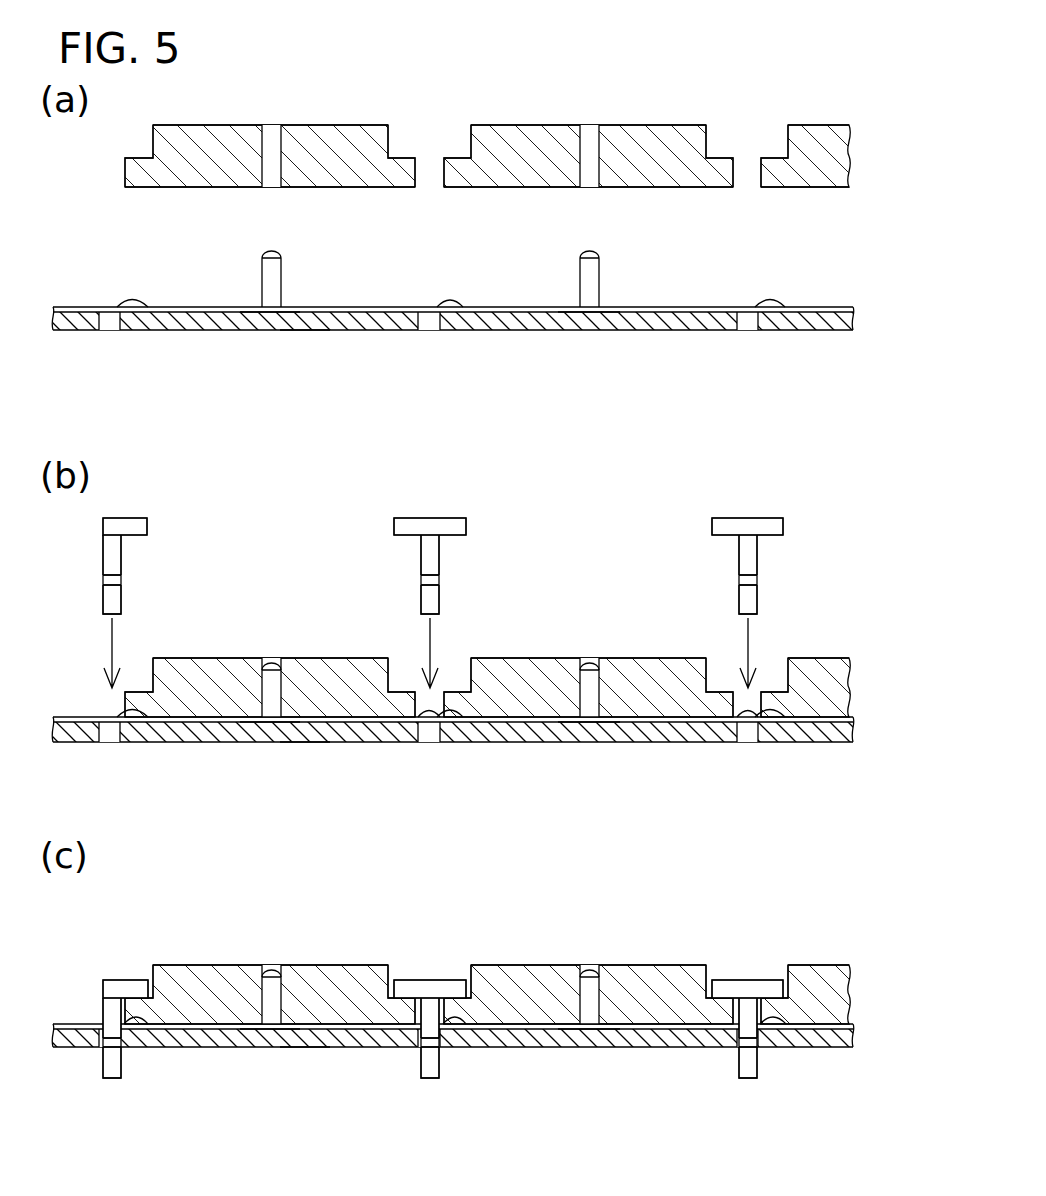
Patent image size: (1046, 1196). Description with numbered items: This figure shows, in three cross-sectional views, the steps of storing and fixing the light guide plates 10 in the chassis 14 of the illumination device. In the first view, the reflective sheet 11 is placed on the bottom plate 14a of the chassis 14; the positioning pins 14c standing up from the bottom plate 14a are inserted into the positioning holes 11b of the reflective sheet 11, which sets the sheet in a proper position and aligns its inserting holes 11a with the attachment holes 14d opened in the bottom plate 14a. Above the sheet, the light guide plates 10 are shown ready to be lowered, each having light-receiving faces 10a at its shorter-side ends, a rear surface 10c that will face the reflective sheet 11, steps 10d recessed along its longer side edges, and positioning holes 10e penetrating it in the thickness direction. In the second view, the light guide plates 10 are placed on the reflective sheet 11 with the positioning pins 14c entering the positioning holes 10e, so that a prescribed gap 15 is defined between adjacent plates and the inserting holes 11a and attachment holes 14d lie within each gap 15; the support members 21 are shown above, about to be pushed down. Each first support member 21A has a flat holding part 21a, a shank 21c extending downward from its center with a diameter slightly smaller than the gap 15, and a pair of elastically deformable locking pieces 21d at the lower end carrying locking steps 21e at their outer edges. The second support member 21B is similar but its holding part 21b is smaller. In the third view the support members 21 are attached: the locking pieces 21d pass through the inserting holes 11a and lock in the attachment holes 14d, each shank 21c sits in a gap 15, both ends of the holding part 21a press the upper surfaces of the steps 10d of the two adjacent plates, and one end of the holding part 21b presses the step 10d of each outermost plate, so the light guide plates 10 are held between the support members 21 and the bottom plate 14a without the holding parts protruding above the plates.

The light guide plate 10 is at (323, 137).
The light-receiving face 10a is at (200, 125).
The rear surface 10c is at (203, 187).
The step 10d is at (140, 157).
The positioning hole 10e is at (267, 157).
The reflective sheet 11 is at (77, 305).
The inserting hole 11a is at (153, 325).
The positioning hole 11b is at (258, 313).
The chassis 14 is at (632, 330).
The bottom plate 14a is at (303, 330).
The positioning pin 14c is at (276, 262).
The attachment hole 14d is at (110, 330).
The gap 15 is at (436, 722).
The support member 21 is at (425, 804).
The first support member 21A is at (462, 522).
The second support member 21B is at (150, 522).
The holding part 21a is at (430, 518).
The holding part 21b is at (127, 518).
The shank 21c is at (113, 560).
The locking piece 21d is at (105, 598).
The locking step 21e is at (121, 580).